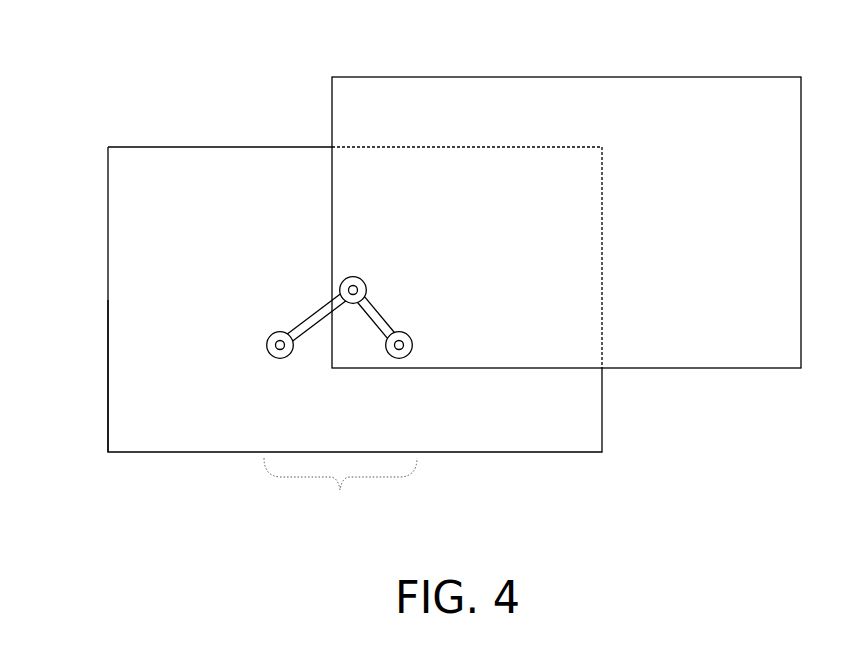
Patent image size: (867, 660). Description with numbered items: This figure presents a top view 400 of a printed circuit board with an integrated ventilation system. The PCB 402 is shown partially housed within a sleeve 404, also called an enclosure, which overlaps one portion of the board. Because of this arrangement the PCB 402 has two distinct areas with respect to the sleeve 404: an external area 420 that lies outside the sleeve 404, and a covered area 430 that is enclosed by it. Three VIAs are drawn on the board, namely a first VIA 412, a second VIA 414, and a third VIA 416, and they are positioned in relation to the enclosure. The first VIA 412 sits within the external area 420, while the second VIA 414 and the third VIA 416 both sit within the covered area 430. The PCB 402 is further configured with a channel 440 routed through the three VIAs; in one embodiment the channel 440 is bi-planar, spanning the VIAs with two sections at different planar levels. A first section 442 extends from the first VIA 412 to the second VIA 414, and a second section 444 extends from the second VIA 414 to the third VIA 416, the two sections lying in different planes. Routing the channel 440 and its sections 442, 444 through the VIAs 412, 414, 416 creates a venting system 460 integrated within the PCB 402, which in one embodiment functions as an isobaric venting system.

The top view 400 is at (119, 491).
The PCB 402 is at (321, 280).
The sleeve 404 is at (332, 77).
The first VIA 412 is at (289, 331).
The second VIA 414 is at (349, 276).
The third VIA 416 is at (400, 332).
The external area 420 is at (117, 333).
The covered area 430 is at (342, 159).
The channel 440 is at (302, 339).
The first section 442 is at (306, 334).
The second section 444 is at (381, 335).
The venting system 460 is at (340, 486).